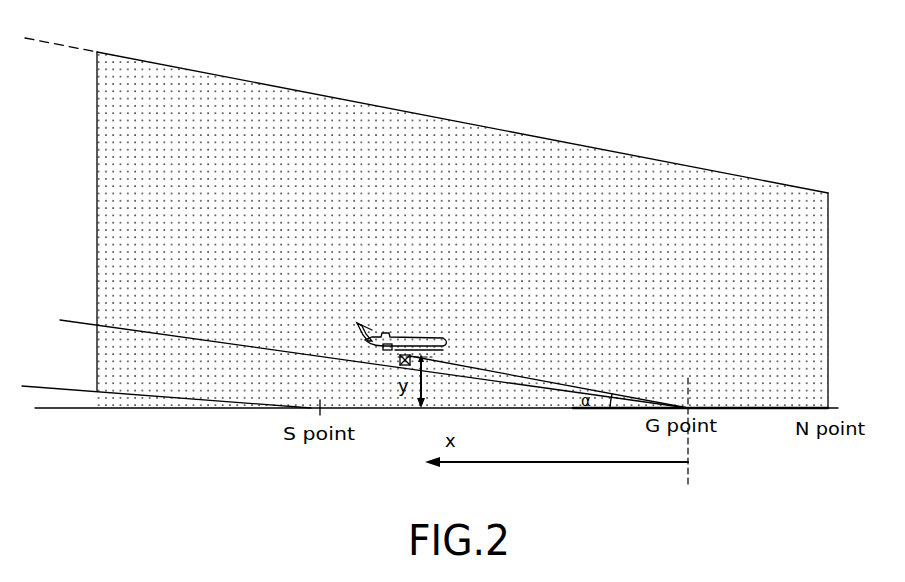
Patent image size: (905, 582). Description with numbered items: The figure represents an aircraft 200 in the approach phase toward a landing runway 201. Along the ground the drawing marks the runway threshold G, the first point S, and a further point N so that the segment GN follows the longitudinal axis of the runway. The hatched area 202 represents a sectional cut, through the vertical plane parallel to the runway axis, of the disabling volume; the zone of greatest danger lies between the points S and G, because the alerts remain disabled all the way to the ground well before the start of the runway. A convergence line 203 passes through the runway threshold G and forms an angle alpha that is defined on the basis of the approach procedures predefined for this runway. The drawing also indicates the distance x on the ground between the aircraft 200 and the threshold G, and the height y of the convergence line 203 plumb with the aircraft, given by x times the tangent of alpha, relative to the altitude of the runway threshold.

The aircraft 200 is at (410, 330).
The landing runway 201 is at (749, 408).
The hatched area 202 is at (633, 183).
The convergence line 203 is at (143, 330).